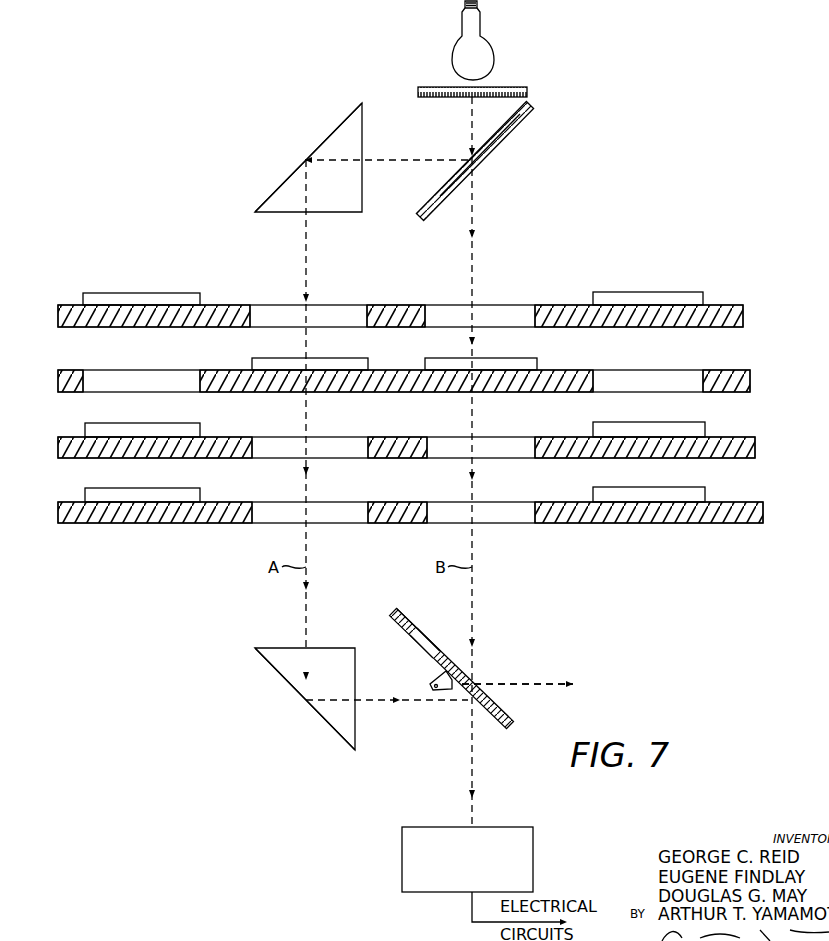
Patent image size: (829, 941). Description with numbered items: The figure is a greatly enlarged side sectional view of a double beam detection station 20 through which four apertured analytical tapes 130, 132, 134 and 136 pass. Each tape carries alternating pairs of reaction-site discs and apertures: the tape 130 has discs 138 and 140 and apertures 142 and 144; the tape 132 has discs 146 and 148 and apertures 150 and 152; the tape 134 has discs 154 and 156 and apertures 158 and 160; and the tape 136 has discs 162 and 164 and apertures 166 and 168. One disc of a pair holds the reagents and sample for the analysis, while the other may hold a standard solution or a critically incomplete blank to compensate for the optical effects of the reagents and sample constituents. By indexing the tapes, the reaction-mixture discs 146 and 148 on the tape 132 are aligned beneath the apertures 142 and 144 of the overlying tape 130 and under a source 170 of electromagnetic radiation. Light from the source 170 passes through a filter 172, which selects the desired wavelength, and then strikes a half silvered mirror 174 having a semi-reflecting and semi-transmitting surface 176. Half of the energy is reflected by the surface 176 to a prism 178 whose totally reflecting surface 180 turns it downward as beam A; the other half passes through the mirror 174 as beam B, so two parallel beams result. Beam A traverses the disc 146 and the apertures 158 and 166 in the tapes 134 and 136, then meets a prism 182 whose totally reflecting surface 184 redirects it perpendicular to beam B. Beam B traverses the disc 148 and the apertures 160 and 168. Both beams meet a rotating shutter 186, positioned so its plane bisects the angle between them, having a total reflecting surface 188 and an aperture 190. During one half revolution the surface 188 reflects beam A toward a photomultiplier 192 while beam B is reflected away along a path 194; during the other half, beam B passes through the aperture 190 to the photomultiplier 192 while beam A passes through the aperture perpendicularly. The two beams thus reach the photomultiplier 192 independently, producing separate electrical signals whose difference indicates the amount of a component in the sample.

The plate stack assembly 20 is at (624, 266).
The tape 130 is at (743, 316).
The tape 132 is at (750, 383).
The tape 134 is at (755, 447).
The tape 136 is at (763, 511).
The disc 138 is at (142, 293).
The disc 140 is at (640, 292).
The aperture 142 is at (338, 305).
The aperture 144 is at (495, 305).
The disc 146 is at (343, 358).
The disc 148 is at (508, 358).
The aperture 150 is at (137, 370).
The aperture 152 is at (638, 370).
The disc 154 is at (172, 423).
The disc 156 is at (655, 422).
The aperture 158 is at (323, 437).
The aperture 160 is at (483, 437).
The disc 162 is at (193, 488).
The disc 164 is at (657, 487).
The aperture 166 is at (330, 502).
The aperture 168 is at (502, 502).
The source of electromagnetic radiation 170 is at (490, 36).
The filter 172 is at (525, 88).
The half silvered mirror 174 is at (507, 137).
The semi-reflecting and semi-transmitting surface 176 is at (492, 135).
The prism 178 is at (362, 183).
The totally reflecting surface 180 is at (290, 177).
The prism 182 is at (332, 652).
The totally reflecting surface 184 is at (308, 707).
The rotating shutter 186 is at (503, 705).
The total reflecting surface 188 is at (487, 717).
The aperture 190 is at (427, 640).
The photomultiplier 192 is at (533, 835).
The path 194 is at (497, 685).